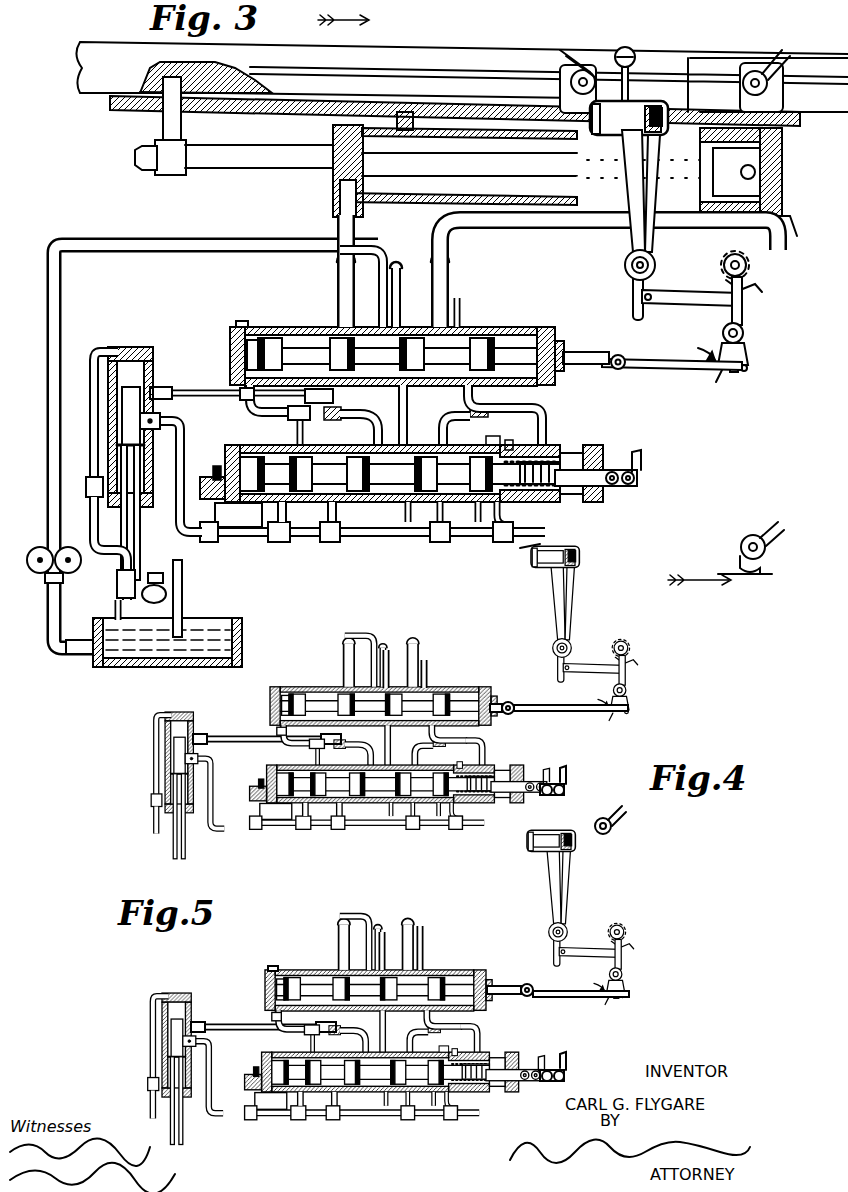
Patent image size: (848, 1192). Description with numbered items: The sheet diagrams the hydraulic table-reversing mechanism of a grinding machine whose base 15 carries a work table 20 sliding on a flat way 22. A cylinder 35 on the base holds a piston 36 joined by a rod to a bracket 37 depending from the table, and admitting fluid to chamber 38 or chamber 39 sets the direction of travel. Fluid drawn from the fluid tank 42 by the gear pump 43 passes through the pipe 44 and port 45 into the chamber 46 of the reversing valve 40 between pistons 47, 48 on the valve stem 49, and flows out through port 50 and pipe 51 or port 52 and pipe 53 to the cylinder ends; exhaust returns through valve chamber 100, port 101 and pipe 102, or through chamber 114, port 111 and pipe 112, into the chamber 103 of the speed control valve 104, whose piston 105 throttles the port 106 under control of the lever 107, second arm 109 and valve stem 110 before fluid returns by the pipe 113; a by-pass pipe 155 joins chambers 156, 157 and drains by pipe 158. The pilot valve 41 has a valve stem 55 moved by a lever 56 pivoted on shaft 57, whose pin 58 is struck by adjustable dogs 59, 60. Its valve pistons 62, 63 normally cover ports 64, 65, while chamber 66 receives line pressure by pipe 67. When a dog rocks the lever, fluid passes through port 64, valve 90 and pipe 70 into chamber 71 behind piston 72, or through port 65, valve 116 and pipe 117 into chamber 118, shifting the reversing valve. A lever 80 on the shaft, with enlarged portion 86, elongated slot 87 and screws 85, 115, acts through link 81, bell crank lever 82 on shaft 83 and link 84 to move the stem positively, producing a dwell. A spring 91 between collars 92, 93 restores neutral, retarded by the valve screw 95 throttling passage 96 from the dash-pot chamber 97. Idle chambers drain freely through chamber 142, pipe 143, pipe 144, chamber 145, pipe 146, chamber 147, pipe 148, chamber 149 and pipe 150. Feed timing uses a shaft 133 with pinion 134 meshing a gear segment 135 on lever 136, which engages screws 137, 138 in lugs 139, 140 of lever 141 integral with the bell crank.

In FIG. 3, the base 15 is at (108, 108).
In FIG. 3, the work table 20 is at (108, 52).
In FIG. 3, the flat way 22 is at (76, 93).
In FIG. 3, the cylinder 35 is at (455, 128).
In FIG. 3, the piston 36 is at (786, 222).
In FIG. 3, the bracket 37 is at (176, 172).
In FIG. 3, the chamber 38 is at (402, 180).
In FIG. 3, the chamber 39 is at (760, 172).
In FIG. 3, the reversing valve 40 is at (510, 326).
In FIG. 4, the reversing valve 40 is at (463, 688).
In FIG. 5, the reversing valve 40 is at (472, 972).
In FIG. 3, the pilot valve 41 is at (582, 447).
In FIG. 4, the pilot valve 41 is at (506, 766).
In FIG. 5, the pilot valve 41 is at (502, 1048).
In FIG. 3, the fluid tank 42 is at (238, 632).
In FIG. 3, the gear pump 43 is at (72, 570).
In FIG. 3, the pipe 44 is at (64, 296).
In FIG. 4, the pipe 44 is at (388, 646).
In FIG. 5, the pipe 44 is at (384, 928).
In FIG. 3, the port 45 is at (390, 318).
In FIG. 4, the port 45 is at (380, 660).
In FIG. 5, the port 45 is at (376, 938).
In FIG. 3, the chamber 46 is at (403, 326).
In FIG. 4, the chamber 46 is at (386, 644).
In FIG. 5, the chamber 46 is at (406, 948).
In FIG. 3, the piston 47 is at (377, 318).
In FIG. 4, the piston 47 is at (372, 690).
In FIG. 5, the piston 47 is at (370, 970).
In FIG. 3, the piston 48 is at (450, 312).
In FIG. 4, the piston 48 is at (420, 644).
In FIG. 5, the piston 48 is at (426, 952).
In FIG. 3, the valve stem 49 is at (586, 352).
In FIG. 4, the valve stem 49 is at (497, 702).
In FIG. 5, the valve stem 49 is at (498, 984).
In FIG. 3, the port 50 is at (402, 338).
In FIG. 4, the port 50 is at (392, 700).
In FIG. 5, the port 50 is at (390, 978).
In FIG. 3, the pipe 51 is at (337, 272).
In FIG. 4, the pipe 51 is at (350, 656).
In FIG. 5, the pipe 51 is at (345, 932).
In FIG. 3, the port 52 is at (462, 322).
In FIG. 4, the port 52 is at (426, 688).
In FIG. 5, the port 52 is at (426, 968).
In FIG. 3, the pipe 53 is at (522, 230).
In FIG. 4, the pipe 53 is at (426, 658).
In FIG. 5, the pipe 53 is at (422, 922).
In FIG. 3, the valve stem 55 is at (600, 474).
In FIG. 4, the valve stem 55 is at (526, 788).
In FIG. 5, the valve stem 55 is at (524, 1072).
In FIG. 3, the lever 56 is at (654, 212).
In FIG. 4, the lever 56 is at (574, 600).
In FIG. 5, the lever 56 is at (552, 972).
In FIG. 3, the shaft 57 is at (656, 268).
In FIG. 4, the shaft 57 is at (574, 652).
In FIG. 5, the shaft 57 is at (572, 938).
In FIG. 3, the pin 58 is at (660, 110).
In FIG. 4, the pin 58 is at (584, 570).
In FIG. 5, the pin 58 is at (586, 940).
In FIG. 3, the adjustable dog 59 is at (586, 68).
In FIG. 4, the adjustable dog 59 is at (522, 564).
In FIG. 3, the adjustable dog 60 is at (760, 70).
In FIG. 5, the adjustable dog 60 is at (606, 836).
In FIG. 3, the valve piston 62 is at (347, 502).
In FIG. 4, the valve piston 62 is at (349, 806).
In FIG. 5, the valve piston 62 is at (353, 1094).
In FIG. 3, the valve piston 63 is at (404, 502).
In FIG. 4, the valve piston 63 is at (401, 806).
In FIG. 5, the valve piston 63 is at (400, 1094).
In FIG. 3, the port 64 is at (358, 432).
In FIG. 4, the port 64 is at (374, 792).
In FIG. 5, the port 64 is at (376, 1100).
In FIG. 3, the port 65 is at (458, 430).
In FIG. 4, the port 65 is at (432, 792).
In FIG. 5, the port 65 is at (410, 1085).
In FIG. 3, the chamber 66 is at (366, 502).
In FIG. 4, the chamber 66 is at (387, 806).
In FIG. 5, the chamber 66 is at (406, 1100).
In FIG. 3, the pipe 67 is at (340, 340).
In FIG. 4, the pipe 67 is at (342, 696).
In FIG. 5, the pipe 67 is at (340, 976).
In FIG. 3, the pipe 70 is at (248, 404).
In FIG. 4, the pipe 70 is at (282, 740).
In FIG. 5, the pipe 70 is at (276, 1030).
In FIG. 3, the chamber 71 is at (232, 350).
In FIG. 4, the chamber 71 is at (270, 693).
In FIG. 5, the chamber 71 is at (266, 984).
In FIG. 3, the piston 72 is at (250, 340).
In FIG. 4, the piston 72 is at (276, 714).
In FIG. 5, the piston 72 is at (276, 990).
In FIG. 3, the lever 80 is at (634, 200).
In FIG. 4, the lever 80 is at (556, 596).
In FIG. 5, the lever 80 is at (564, 972).
In FIG. 3, the link 81 is at (694, 306).
In FIG. 4, the link 81 is at (566, 670).
In FIG. 5, the link 81 is at (590, 954).
In FIG. 3, the bell crank lever 82 is at (748, 350).
In FIG. 4, the bell crank lever 82 is at (634, 706).
In FIG. 5, the bell crank lever 82 is at (630, 986).
In FIG. 3, the shaft 83 is at (744, 330).
In FIG. 4, the shaft 83 is at (636, 692).
In FIG. 5, the shaft 83 is at (632, 974).
In FIG. 3, the link 84 is at (692, 368).
In FIG. 4, the link 84 is at (576, 714).
In FIG. 5, the link 84 is at (590, 1000).
In FIG. 3, the adjustable screw 85 is at (666, 122).
In FIG. 4, the adjustable screw 85 is at (596, 558).
In FIG. 5, the adjustable screw 85 is at (610, 944).
In FIG. 3, the enlarged portion 86 is at (653, 104).
In FIG. 4, the enlarged portion 86 is at (586, 554).
In FIG. 5, the enlarged portion 86 is at (618, 936).
In FIG. 3, the elongated slot 87 is at (624, 47).
In FIG. 4, the elongated slot 87 is at (546, 552).
In FIG. 5, the elongated slot 87 is at (582, 924).
In FIG. 3, the valve 90 is at (296, 418).
In FIG. 4, the valve 90 is at (290, 756).
In FIG. 5, the valve 90 is at (284, 1042).
In FIG. 3, the spring 91 is at (542, 504).
In FIG. 4, the spring 91 is at (479, 806).
In FIG. 5, the spring 91 is at (479, 1092).
In FIG. 3, the collar 92 is at (512, 462).
In FIG. 4, the collar 92 is at (464, 806).
In FIG. 5, the collar 92 is at (466, 1095).
In FIG. 3, the collar 93 is at (536, 460).
In FIG. 4, the collar 93 is at (488, 768).
In FIG. 5, the collar 93 is at (482, 1050).
In FIG. 3, the valve screw 95 is at (216, 464).
In FIG. 4, the valve screw 95 is at (256, 782).
In FIG. 5, the valve screw 95 is at (252, 1070).
In FIG. 3, the passage 96 is at (206, 480).
In FIG. 4, the passage 96 is at (252, 796).
In FIG. 5, the passage 96 is at (246, 1082).
In FIG. 3, the chamber 97 is at (240, 504).
In FIG. 4, the chamber 97 is at (278, 810).
In FIG. 5, the chamber 97 is at (276, 1094).
In FIG. 3, the valve chamber 100 is at (486, 338).
In FIG. 4, the valve chamber 100 is at (458, 684).
In FIG. 5, the valve chamber 100 is at (444, 978).
In FIG. 3, the port 101 is at (470, 388).
In FIG. 4, the port 101 is at (432, 734).
In FIG. 5, the port 101 is at (430, 1014).
In FIG. 3, the pipe 102 is at (184, 390).
In FIG. 4, the pipe 102 is at (230, 736).
In FIG. 5, the pipe 102 is at (230, 1024).
In FIG. 3, the chamber 103 is at (120, 402).
In FIG. 4, the chamber 103 is at (174, 744).
In FIG. 5, the chamber 103 is at (170, 1030).
In FIG. 3, the speed control valve 104 is at (122, 430).
In FIG. 4, the speed control valve 104 is at (176, 760).
In FIG. 5, the speed control valve 104 is at (170, 1050).
In FIG. 3, the piston 105 is at (122, 444).
In FIG. 4, the piston 105 is at (176, 772).
In FIG. 5, the piston 105 is at (172, 1058).
In FIG. 3, the port 106 is at (152, 430).
In FIG. 4, the port 106 is at (200, 758).
In FIG. 5, the port 106 is at (196, 1044).
In FIG. 3, the lever 107 is at (166, 594).
In FIG. 3, the second arm 109 is at (128, 600).
In FIG. 3, the valve stem 110 is at (128, 508).
In FIG. 4, the valve stem 110 is at (176, 812).
In FIG. 5, the valve stem 110 is at (176, 1098).
In FIG. 3, the port 111 is at (238, 320).
In FIG. 5, the port 111 is at (266, 996).
In FIG. 3, the pipe 112 is at (254, 402).
In FIG. 4, the pipe 112 is at (293, 742).
In FIG. 5, the pipe 112 is at (288, 1027).
In FIG. 3, the exhaust pipe 113 is at (200, 540).
In FIG. 4, the exhaust pipe 113 is at (250, 826).
In FIG. 5, the exhaust pipe 113 is at (244, 1122).
In FIG. 3, the chamber 114 is at (272, 338).
In FIG. 4, the chamber 114 is at (292, 696).
In FIG. 5, the chamber 114 is at (352, 982).
In FIG. 3, the adjustable screw 115 is at (594, 116).
In FIG. 4, the adjustable screw 115 is at (524, 576).
In FIG. 5, the adjustable screw 115 is at (560, 932).
In FIG. 3, the valve 116 is at (505, 433).
In FIG. 5, the valve 116 is at (467, 1041).
In FIG. 3, the pipe 117 is at (544, 410).
In FIG. 4, the pipe 117 is at (474, 746).
In FIG. 5, the pipe 117 is at (474, 1030).
In FIG. 3, the chamber 118 is at (556, 324).
In FIG. 4, the chamber 118 is at (482, 690).
In FIG. 5, the chamber 118 is at (488, 968).
In FIG. 3, the shaft 133 is at (746, 252).
In FIG. 4, the shaft 133 is at (630, 642).
In FIG. 5, the shaft 133 is at (630, 926).
In FIG. 3, the pinion 134 is at (748, 266).
In FIG. 4, the pinion 134 is at (634, 650).
In FIG. 5, the pinion 134 is at (634, 930).
In FIG. 3, the gear segment 135 is at (763, 290).
In FIG. 4, the gear segment 135 is at (638, 662).
In FIG. 5, the gear segment 135 is at (638, 946).
In FIG. 3, the lever 136 is at (730, 296).
In FIG. 4, the lever 136 is at (616, 666).
In FIG. 5, the lever 136 is at (612, 962).
In FIG. 3, the screw 137 is at (704, 356).
In FIG. 4, the screw 137 is at (604, 708).
In FIG. 5, the screw 137 is at (612, 1006).
In FIG. 3, the screw 138 is at (750, 367).
In FIG. 4, the screw 138 is at (632, 712).
In FIG. 5, the screw 138 is at (630, 996).
In FIG. 3, the lug 139 is at (712, 368).
In FIG. 4, the lug 139 is at (602, 710).
In FIG. 5, the lug 139 is at (616, 1002).
In FIG. 3, the lug 140 is at (740, 370).
In FIG. 4, the lug 140 is at (324, 818).
In FIG. 5, the lug 140 is at (330, 1106).
In FIG. 3, the lever 141 is at (734, 376).
In FIG. 4, the lever 141 is at (476, 812).
In FIG. 5, the lever 141 is at (446, 1100).
In FIG. 3, the chamber 142 is at (512, 446).
In FIG. 4, the chamber 142 is at (484, 804).
In FIG. 5, the chamber 142 is at (484, 1090).
In FIG. 3, the pipe 143 is at (494, 516).
In FIG. 4, the pipe 143 is at (456, 846).
In FIG. 5, the pipe 143 is at (472, 1100).
In FIG. 3, the pipe 144 is at (300, 532).
In FIG. 4, the pipe 144 is at (282, 828).
In FIG. 5, the pipe 144 is at (272, 1118).
In FIG. 3, the chamber 145 is at (474, 504).
In FIG. 4, the chamber 145 is at (444, 806).
In FIG. 5, the chamber 145 is at (438, 1086).
In FIG. 3, the pipe 146 is at (442, 504).
In FIG. 4, the pipe 146 is at (438, 806).
In FIG. 5, the pipe 146 is at (440, 1096).
In FIG. 3, the chamber 147 is at (278, 514).
In FIG. 4, the chamber 147 is at (304, 836).
In FIG. 5, the chamber 147 is at (298, 1110).
In FIG. 3, the pipe 148 is at (330, 522).
In FIG. 4, the pipe 148 is at (338, 818).
In FIG. 5, the pipe 148 is at (335, 1106).
In FIG. 3, the chamber 149 is at (332, 506).
In FIG. 4, the chamber 149 is at (390, 818).
In FIG. 5, the chamber 149 is at (388, 1106).
In FIG. 3, the pipe 150 is at (330, 544).
In FIG. 4, the pipe 150 is at (338, 836).
In FIG. 5, the pipe 150 is at (334, 1122).
In FIG. 3, the by-pass pipe 155 is at (90, 374).
In FIG. 4, the by-pass pipe 155 is at (154, 714).
In FIG. 5, the by-pass pipe 155 is at (152, 1006).
In FIG. 3, the chamber 156 is at (142, 348).
In FIG. 4, the chamber 156 is at (190, 712).
In FIG. 5, the chamber 156 is at (178, 992).
In FIG. 3, the chamber 157 is at (160, 480).
In FIG. 4, the chamber 157 is at (182, 812).
In FIG. 5, the chamber 157 is at (180, 1098).
In FIG. 3, the pipe 158 is at (100, 500).
In FIG. 4, the pipe 158 is at (154, 816).
In FIG. 5, the pipe 158 is at (150, 1102).